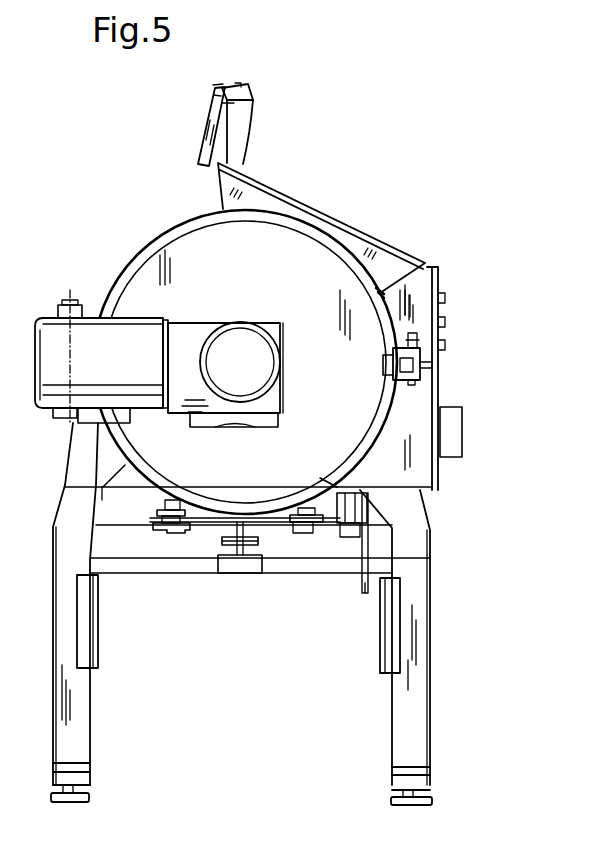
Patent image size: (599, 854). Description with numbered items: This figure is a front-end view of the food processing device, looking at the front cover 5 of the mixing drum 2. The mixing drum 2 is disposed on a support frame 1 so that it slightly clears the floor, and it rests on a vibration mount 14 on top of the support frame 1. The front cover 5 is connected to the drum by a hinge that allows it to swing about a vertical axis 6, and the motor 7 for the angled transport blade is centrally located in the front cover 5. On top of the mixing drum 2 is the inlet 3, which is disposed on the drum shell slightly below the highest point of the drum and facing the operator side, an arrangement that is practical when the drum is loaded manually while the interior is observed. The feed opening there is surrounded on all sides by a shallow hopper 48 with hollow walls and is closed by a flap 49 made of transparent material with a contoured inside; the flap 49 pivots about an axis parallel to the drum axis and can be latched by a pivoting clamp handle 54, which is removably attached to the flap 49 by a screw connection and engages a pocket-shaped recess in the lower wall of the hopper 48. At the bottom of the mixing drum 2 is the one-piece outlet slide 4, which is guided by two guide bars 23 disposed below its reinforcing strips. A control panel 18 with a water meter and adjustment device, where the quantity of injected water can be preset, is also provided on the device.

The support frame 1 is at (418, 700).
The mixing drum 2 is at (100, 243).
The inlet 3 is at (382, 137).
The outlet slide 4 is at (273, 520).
The front cover 5 is at (252, 274).
The vertical axis 6 is at (67, 423).
The motor 7 is at (118, 375).
The vibration mount 14 is at (103, 485).
The control panel 18 is at (420, 282).
The guide bars 23 is at (175, 533).
The hopper 48 is at (380, 260).
The flap 49 is at (237, 130).
The clamp handle 54 is at (213, 133).